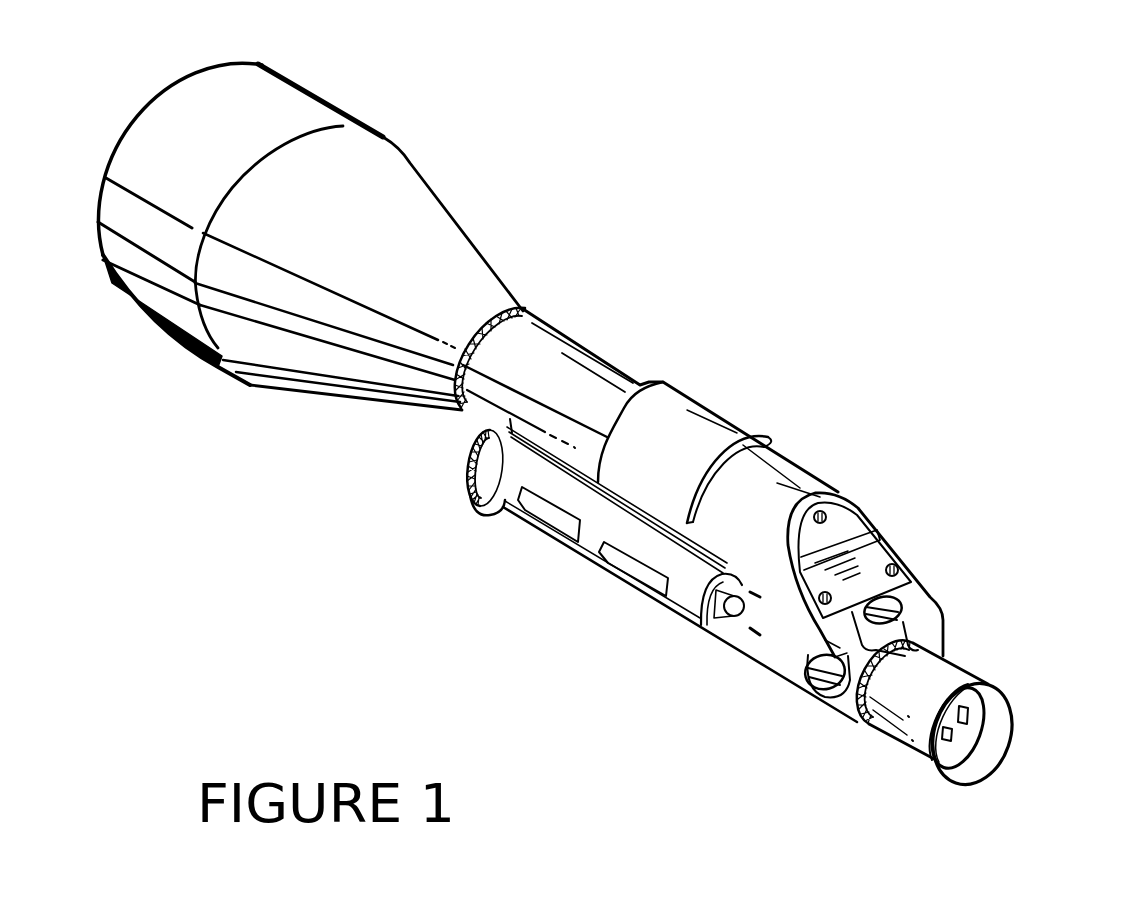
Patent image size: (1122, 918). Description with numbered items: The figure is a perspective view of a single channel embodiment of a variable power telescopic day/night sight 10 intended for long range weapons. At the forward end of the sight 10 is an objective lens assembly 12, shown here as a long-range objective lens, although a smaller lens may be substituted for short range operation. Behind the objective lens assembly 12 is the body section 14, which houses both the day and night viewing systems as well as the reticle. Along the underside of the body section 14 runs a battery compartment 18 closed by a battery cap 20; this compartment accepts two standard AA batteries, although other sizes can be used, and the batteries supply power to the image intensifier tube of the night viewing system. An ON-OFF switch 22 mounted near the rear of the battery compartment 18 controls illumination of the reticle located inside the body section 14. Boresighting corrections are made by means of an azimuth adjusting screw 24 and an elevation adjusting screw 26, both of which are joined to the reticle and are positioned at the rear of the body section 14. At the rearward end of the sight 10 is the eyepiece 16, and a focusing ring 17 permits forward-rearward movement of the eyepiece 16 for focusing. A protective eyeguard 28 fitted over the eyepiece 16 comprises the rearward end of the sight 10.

The telescopic day/night sight 10 is at (497, 196).
The objective lens assembly 12 is at (322, 93).
The body section 14 is at (712, 398).
The eyepiece 16 is at (949, 656).
The focusing ring 17 is at (861, 726).
The battery compartment 18 is at (590, 542).
The battery cap 20 is at (463, 470).
The ON-OFF switch 22 is at (725, 626).
The azimuth adjusting screw 24 is at (809, 688).
The elevation adjusting screw 26 is at (904, 593).
The protective eyeguard 28 is at (1009, 690).